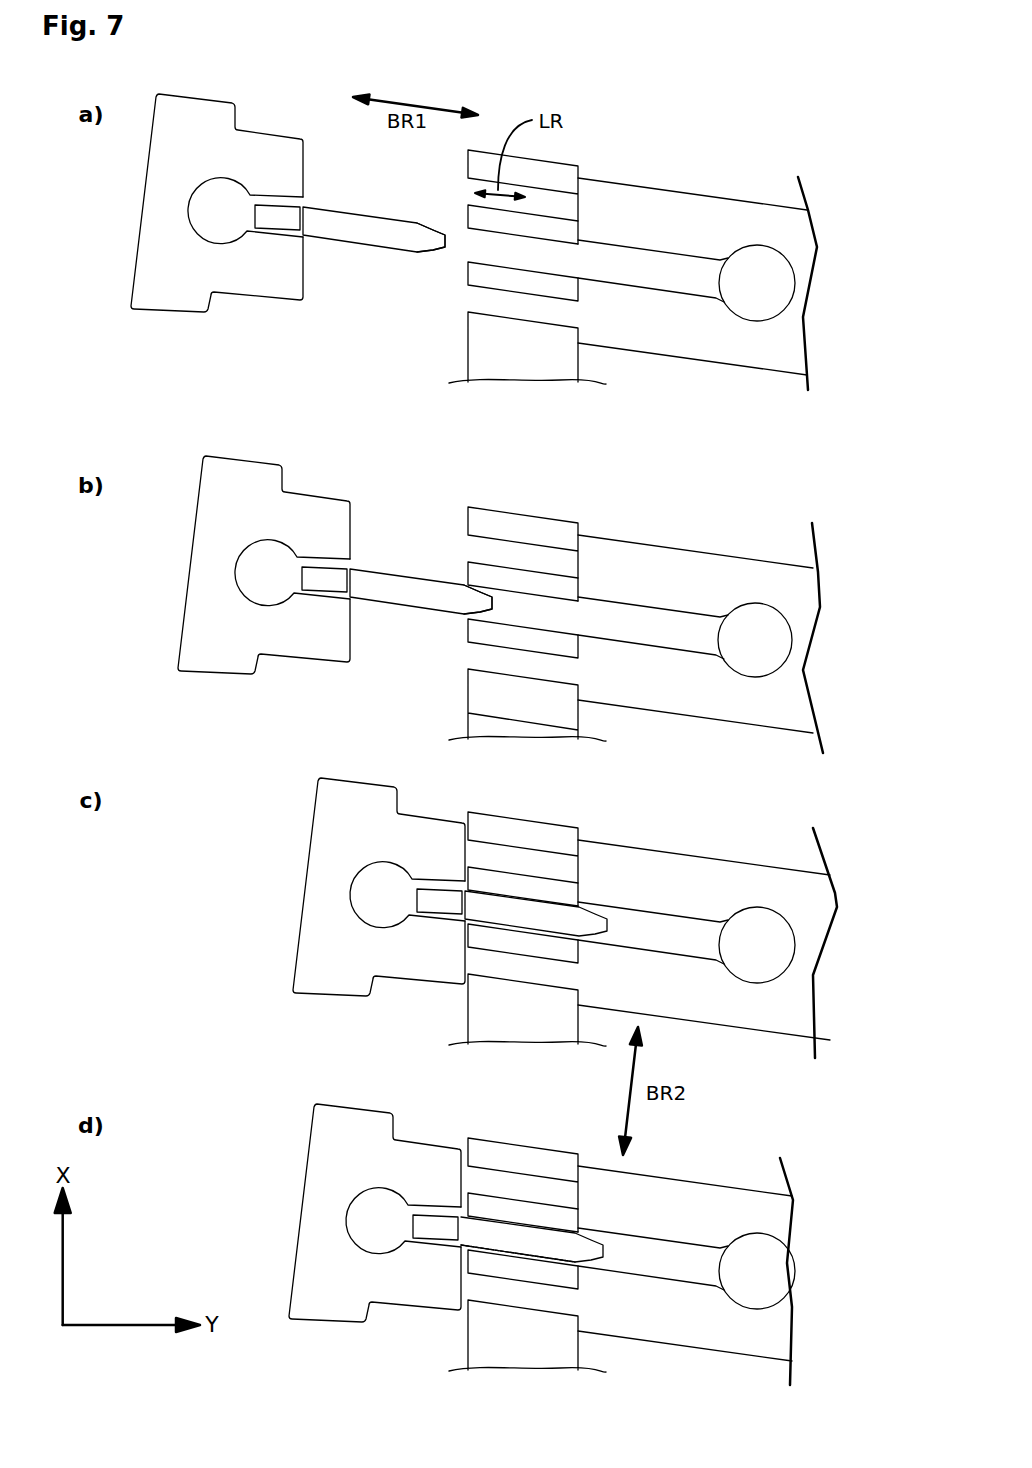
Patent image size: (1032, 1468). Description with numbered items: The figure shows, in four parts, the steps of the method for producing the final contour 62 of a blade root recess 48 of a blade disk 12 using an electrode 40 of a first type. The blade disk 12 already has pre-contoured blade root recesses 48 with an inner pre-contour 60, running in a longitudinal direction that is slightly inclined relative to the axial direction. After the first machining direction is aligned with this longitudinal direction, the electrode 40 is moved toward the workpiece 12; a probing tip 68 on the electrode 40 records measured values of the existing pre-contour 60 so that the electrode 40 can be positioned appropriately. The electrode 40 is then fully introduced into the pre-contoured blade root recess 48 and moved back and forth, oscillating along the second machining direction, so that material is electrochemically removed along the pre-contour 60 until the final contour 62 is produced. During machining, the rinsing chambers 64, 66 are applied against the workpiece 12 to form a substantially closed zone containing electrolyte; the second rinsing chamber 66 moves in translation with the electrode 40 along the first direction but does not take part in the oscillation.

The blade disk 12 is at (535, 333).
The electrode 40 is at (358, 236).
The blade root recess 48 is at (551, 203).
The pre-contour 60 is at (497, 311).
The final contour 62 is at (562, 217).
The rinsing chamber 64 is at (758, 228).
The second rinsing chamber 66 is at (170, 259).
The probing tip 68 is at (430, 232).